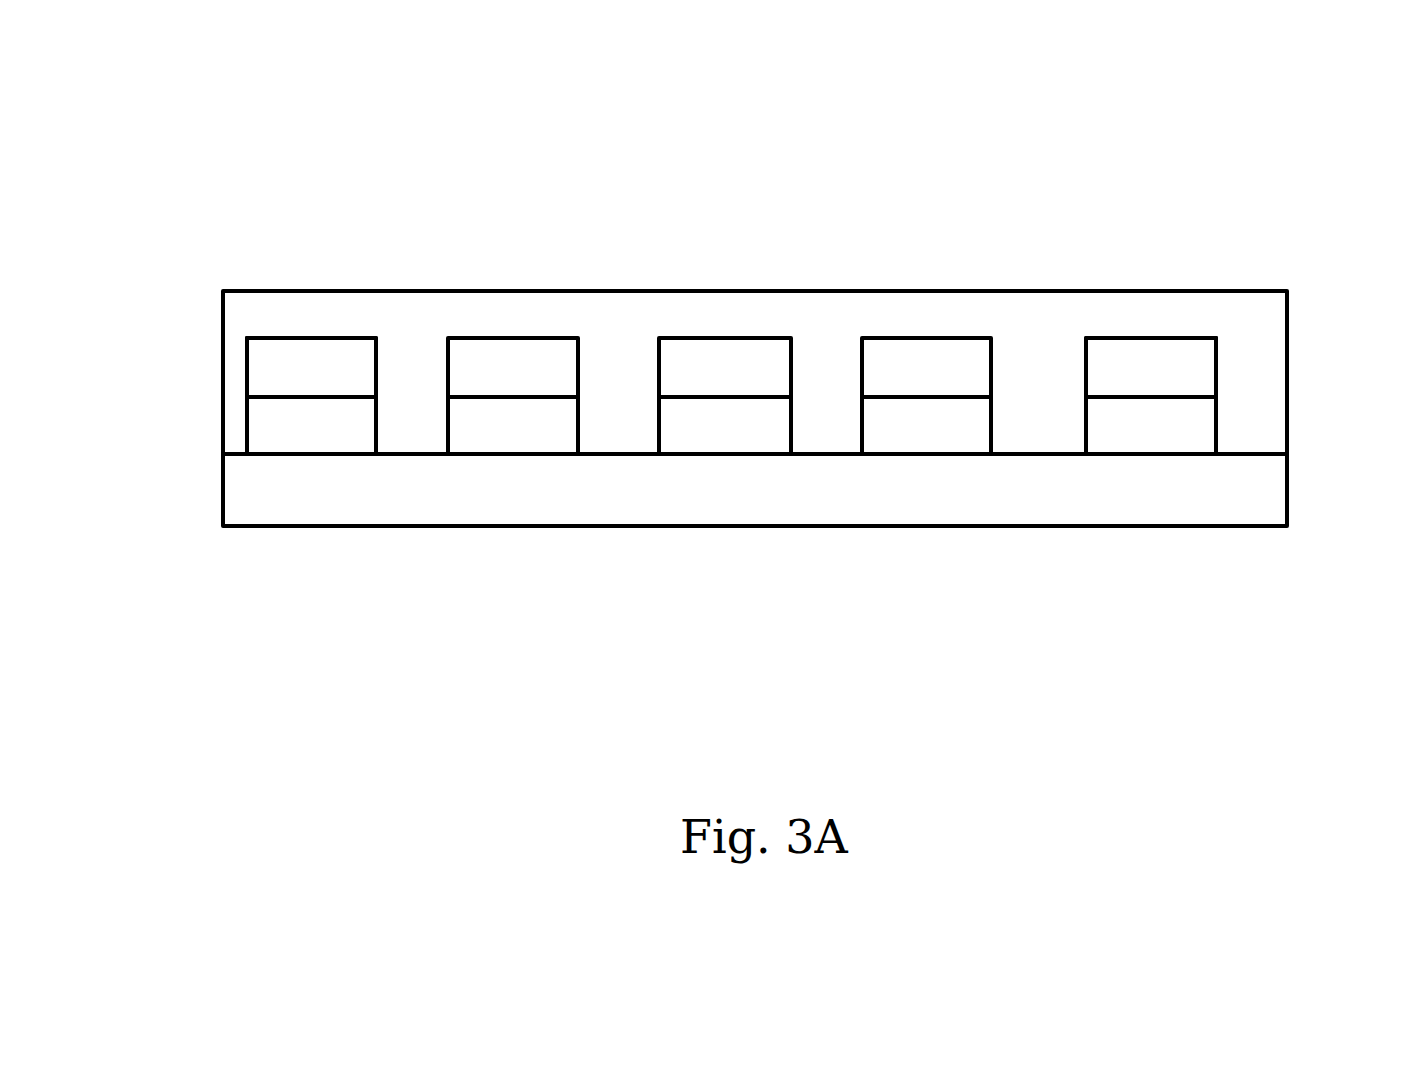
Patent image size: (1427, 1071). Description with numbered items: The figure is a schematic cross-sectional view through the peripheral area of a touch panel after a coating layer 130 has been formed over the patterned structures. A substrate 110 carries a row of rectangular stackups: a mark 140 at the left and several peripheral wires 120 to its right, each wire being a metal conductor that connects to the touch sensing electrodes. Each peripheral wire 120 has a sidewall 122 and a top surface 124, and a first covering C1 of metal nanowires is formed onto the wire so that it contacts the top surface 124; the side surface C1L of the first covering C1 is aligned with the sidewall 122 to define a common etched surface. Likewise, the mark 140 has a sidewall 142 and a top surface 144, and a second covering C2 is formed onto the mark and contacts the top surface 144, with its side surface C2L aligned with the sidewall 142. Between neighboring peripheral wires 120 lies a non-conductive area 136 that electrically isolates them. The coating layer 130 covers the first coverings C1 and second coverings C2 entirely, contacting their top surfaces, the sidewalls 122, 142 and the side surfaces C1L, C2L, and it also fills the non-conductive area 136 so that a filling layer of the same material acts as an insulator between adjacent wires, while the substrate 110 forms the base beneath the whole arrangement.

The substrate 110 is at (1215, 503).
The peripheral wire 120 is at (530, 433).
The sidewall 122 is at (1217, 425).
The top surface 124 is at (1132, 395).
The coating layer 130 is at (507, 288).
The non-conductive area 136 is at (627, 360).
The mark 140 is at (318, 433).
The sidewall 142 is at (245, 420).
The top surface 144 is at (340, 395).
The first covering C1 is at (720, 325).
The side surface C1L is at (1217, 368).
The second covering C2 is at (313, 335).
The side surface C2L is at (245, 362).